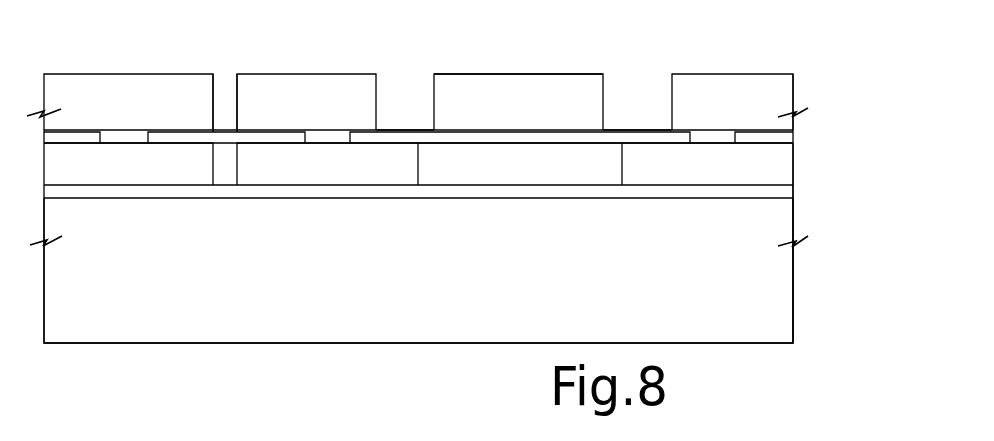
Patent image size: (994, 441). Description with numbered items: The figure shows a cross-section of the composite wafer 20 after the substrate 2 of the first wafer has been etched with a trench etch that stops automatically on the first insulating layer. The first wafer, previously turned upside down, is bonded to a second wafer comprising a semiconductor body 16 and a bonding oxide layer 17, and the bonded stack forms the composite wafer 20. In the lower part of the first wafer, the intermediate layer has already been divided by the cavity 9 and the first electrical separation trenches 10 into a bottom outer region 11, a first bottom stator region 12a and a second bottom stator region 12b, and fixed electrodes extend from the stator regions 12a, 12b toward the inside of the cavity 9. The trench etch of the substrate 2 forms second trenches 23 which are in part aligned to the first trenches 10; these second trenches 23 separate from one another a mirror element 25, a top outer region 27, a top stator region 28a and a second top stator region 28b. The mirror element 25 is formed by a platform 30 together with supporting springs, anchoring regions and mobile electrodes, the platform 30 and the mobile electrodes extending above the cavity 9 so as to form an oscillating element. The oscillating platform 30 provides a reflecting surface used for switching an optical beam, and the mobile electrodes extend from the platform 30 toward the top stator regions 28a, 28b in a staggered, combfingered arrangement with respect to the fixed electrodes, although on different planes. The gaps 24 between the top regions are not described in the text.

The substrate 2 is at (806, 90).
The cavity 9 is at (478, 165).
The first electrical separation trenches 10 is at (227, 170).
The bottom outer region 11 is at (130, 155).
The first bottom stator region 12a is at (325, 165).
The second bottom stator region 12b is at (685, 155).
The semiconductor body 16 is at (728, 315).
The bonding oxide layer 17 is at (395, 192).
The composite wafer 20 is at (812, 192).
The second trenches 23 is at (225, 88).
The gap 24 is at (400, 88).
The mirror element 25 is at (566, 88).
The top outer region 27 is at (76, 98).
The top stator region 28a is at (305, 90).
The second top stator region 28b is at (727, 90).
The platform 30 is at (524, 88).